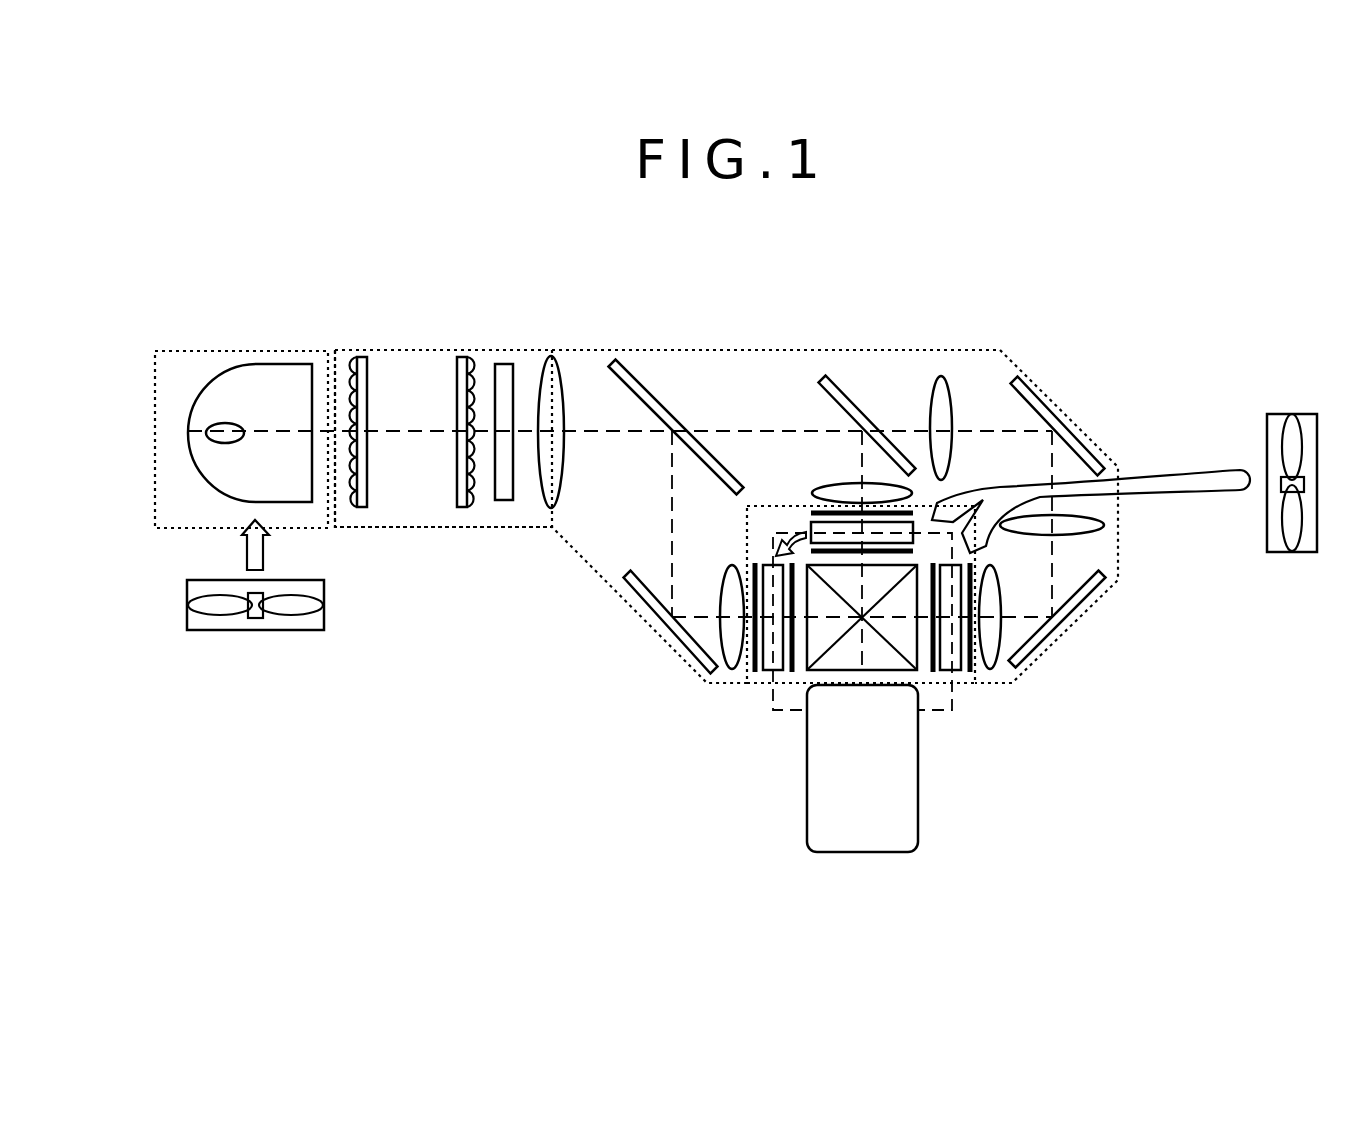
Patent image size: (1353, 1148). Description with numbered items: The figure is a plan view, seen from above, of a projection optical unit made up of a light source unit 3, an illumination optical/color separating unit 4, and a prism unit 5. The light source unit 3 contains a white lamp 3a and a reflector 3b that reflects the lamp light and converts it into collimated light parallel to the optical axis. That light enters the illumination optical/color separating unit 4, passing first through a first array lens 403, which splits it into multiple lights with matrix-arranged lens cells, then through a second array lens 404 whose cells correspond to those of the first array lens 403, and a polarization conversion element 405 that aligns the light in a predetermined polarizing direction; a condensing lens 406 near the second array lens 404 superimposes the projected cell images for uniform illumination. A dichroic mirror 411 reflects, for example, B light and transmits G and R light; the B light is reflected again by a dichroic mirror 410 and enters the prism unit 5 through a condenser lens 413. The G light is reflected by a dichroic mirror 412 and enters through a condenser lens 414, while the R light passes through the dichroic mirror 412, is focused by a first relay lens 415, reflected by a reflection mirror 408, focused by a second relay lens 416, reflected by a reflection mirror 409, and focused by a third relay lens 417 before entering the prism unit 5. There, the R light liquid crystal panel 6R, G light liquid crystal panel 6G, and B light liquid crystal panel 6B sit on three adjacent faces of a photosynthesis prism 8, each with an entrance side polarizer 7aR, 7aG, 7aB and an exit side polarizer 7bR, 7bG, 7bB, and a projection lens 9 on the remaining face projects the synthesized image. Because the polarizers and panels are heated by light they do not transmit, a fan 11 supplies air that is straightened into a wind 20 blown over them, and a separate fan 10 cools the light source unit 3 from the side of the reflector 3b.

The light source unit 3 is at (230, 345).
The lamp 3a is at (238, 424).
The reflector 3b is at (200, 482).
The illumination optical/color separating unit 4 is at (433, 345).
The first array lens 403 is at (362, 357).
The second array lens 404 is at (470, 360).
The polarization conversion element 405 is at (505, 500).
The condensing lens 406 is at (553, 358).
The dichroic mirror 411 is at (640, 378).
The dichroic mirror 410 is at (656, 630).
The dichroic mirror 412 is at (848, 393).
The reflection mirror 408 is at (1060, 416).
The reflection mirror 409 is at (1068, 627).
The condenser lens 413 is at (733, 686).
The condenser lens 414 is at (843, 488).
The first relay lens 415 is at (950, 393).
The second relay lens 416 is at (1118, 541).
The third relay lens 417 is at (1000, 668).
The prism unit 5 is at (940, 712).
The G light liquid crystal panel 6G is at (810, 525).
The B light liquid crystal panel 6B is at (773, 672).
The R light liquid crystal panel 6R is at (955, 673).
The entrance side polarizer 7aG is at (808, 512).
The exit side polarizer 7bG is at (918, 549).
The entrance side polarizer 7aB is at (755, 672).
The exit side polarizer 7bB is at (792, 672).
The entrance side polarizer 7aR is at (972, 673).
The exit side polarizer 7bR is at (940, 673).
The photosynthesis prism 8 is at (812, 672).
The projection lens 9 is at (866, 853).
The fan 10 is at (292, 632).
The fan 11 is at (1290, 414).
The wind 20 is at (1192, 492).